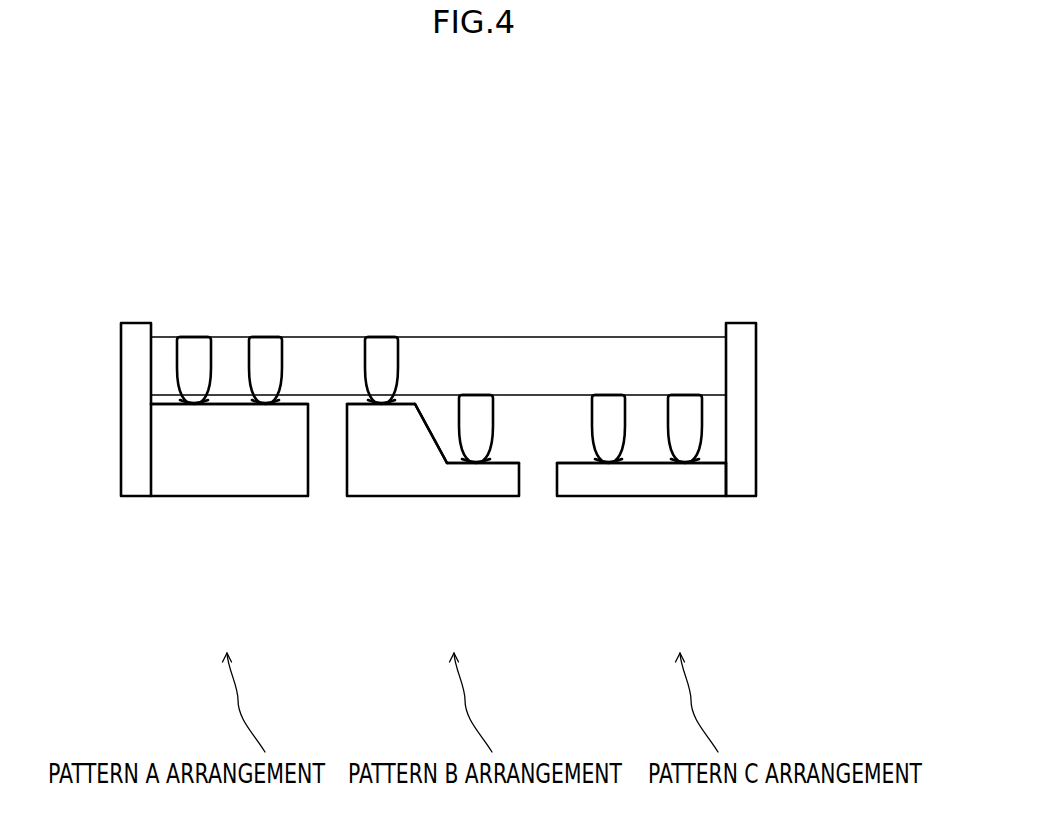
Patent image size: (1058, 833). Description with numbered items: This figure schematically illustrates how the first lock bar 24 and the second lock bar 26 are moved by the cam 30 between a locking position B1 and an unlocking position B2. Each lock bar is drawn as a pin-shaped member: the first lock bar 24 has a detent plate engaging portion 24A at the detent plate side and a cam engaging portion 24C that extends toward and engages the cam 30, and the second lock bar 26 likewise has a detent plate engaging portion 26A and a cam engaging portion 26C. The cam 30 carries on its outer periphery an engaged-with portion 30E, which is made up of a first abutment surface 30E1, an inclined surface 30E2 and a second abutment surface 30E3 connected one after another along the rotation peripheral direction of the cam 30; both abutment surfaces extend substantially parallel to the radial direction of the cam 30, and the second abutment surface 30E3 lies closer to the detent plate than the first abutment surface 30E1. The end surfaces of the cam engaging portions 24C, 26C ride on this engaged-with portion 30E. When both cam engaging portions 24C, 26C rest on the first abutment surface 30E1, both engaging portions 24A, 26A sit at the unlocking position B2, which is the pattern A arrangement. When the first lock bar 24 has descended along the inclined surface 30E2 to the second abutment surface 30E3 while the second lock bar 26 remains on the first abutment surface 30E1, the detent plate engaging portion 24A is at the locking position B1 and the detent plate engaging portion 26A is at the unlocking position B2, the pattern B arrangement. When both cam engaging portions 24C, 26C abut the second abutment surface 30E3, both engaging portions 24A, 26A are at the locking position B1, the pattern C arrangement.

The first lock bar 24 is at (303, 404).
The detent plate engaging portion 24A is at (294, 362).
The cam engaging portion 24C is at (263, 406).
The second lock bar 26 is at (175, 366).
The detent plate engaging portion 26A is at (192, 337).
The cam engaging portion 26C is at (197, 405).
The cam 30 is at (231, 497).
The engaged-with portion 30E is at (465, 528).
The first abutment surface 30E1 is at (233, 404).
The inclined surface 30E2 is at (435, 440).
The second abutment surface 30E3 is at (503, 461).
The locking position B1 is at (768, 393).
The unlocking position B2 is at (768, 333).